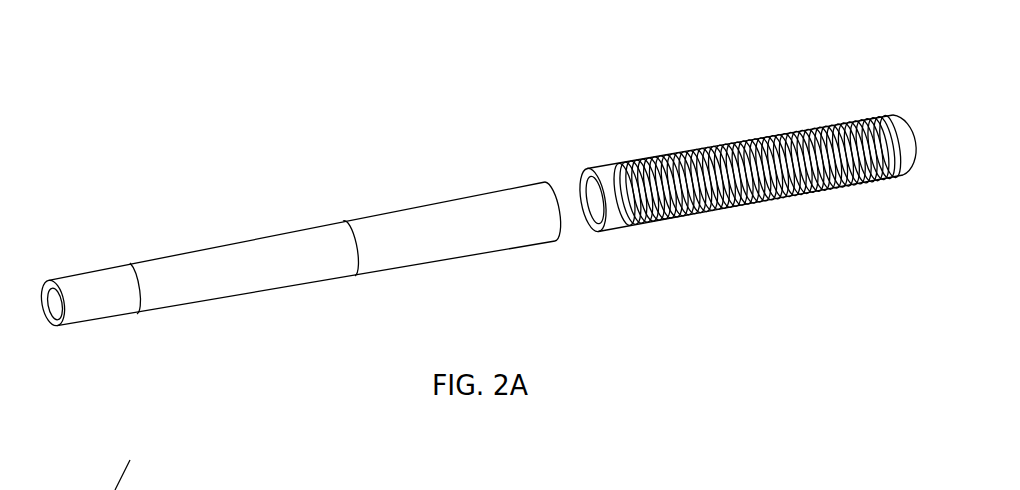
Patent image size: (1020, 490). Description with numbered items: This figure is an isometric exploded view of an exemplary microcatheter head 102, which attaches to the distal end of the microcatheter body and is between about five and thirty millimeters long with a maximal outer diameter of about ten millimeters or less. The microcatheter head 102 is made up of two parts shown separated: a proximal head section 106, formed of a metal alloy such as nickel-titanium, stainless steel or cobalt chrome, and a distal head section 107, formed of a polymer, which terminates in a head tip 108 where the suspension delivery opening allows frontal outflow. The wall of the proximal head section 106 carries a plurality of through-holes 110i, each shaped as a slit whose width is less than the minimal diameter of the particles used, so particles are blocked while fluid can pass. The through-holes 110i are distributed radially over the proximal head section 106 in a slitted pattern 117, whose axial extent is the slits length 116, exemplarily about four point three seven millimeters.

The microcatheter head 102 is at (595, 291).
The proximal head section 106 is at (773, 62).
The distal head section 107 is at (267, 138).
The head tip 108 is at (62, 325).
The through-holes 110i is at (643, 163).
The slits length 116 is at (780, 230).
The slitted pattern 117 is at (727, 228).